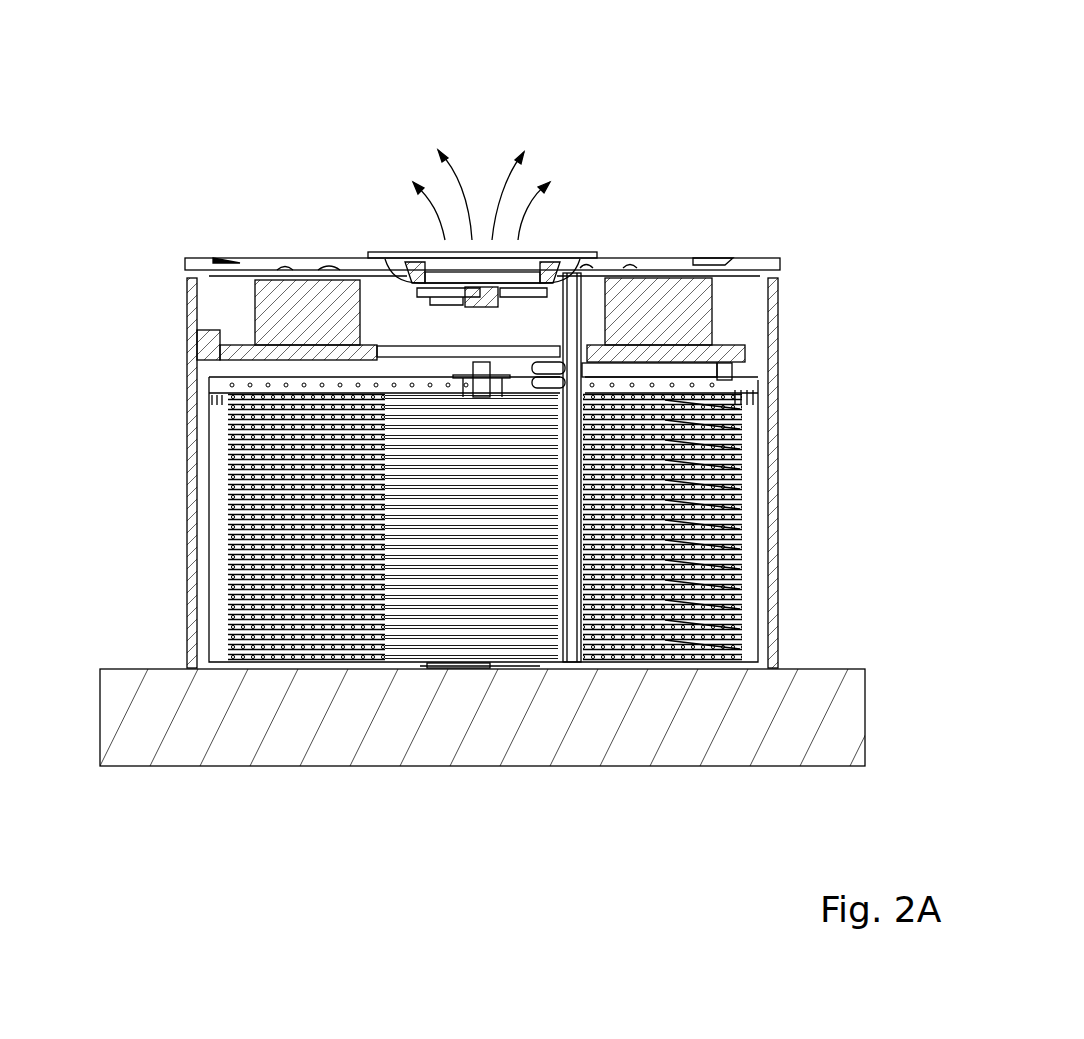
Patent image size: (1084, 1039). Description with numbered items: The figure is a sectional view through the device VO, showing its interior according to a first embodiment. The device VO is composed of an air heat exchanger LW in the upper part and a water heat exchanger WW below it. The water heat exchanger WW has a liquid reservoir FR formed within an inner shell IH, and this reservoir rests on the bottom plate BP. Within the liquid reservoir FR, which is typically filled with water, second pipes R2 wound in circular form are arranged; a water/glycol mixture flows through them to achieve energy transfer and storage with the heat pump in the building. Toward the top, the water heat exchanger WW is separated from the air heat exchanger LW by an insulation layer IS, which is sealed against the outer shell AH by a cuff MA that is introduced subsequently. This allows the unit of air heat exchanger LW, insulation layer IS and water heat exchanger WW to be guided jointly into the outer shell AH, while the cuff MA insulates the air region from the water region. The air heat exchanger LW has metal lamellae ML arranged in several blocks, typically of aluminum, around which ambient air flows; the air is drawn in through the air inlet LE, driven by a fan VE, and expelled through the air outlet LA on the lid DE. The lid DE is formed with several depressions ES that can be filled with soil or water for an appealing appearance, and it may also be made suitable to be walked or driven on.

The air inlet LE is at (187, 272).
The metal lamellae ML is at (280, 310).
The cuff MA is at (197, 345).
The outer shell AH is at (188, 400).
The inner shell IH is at (210, 488).
The device VO is at (345, 192).
The depressions ES is at (335, 267).
The fan VE is at (445, 267).
The air outlet LA is at (523, 220).
The lid DE is at (630, 263).
The air heat exchanger LW is at (750, 308).
The insulation layer IS is at (730, 353).
The liquid reservoir FR is at (738, 455).
The water heat exchanger WW is at (747, 485).
The second pipes R2 is at (735, 577).
The bottom plate BP is at (397, 733).